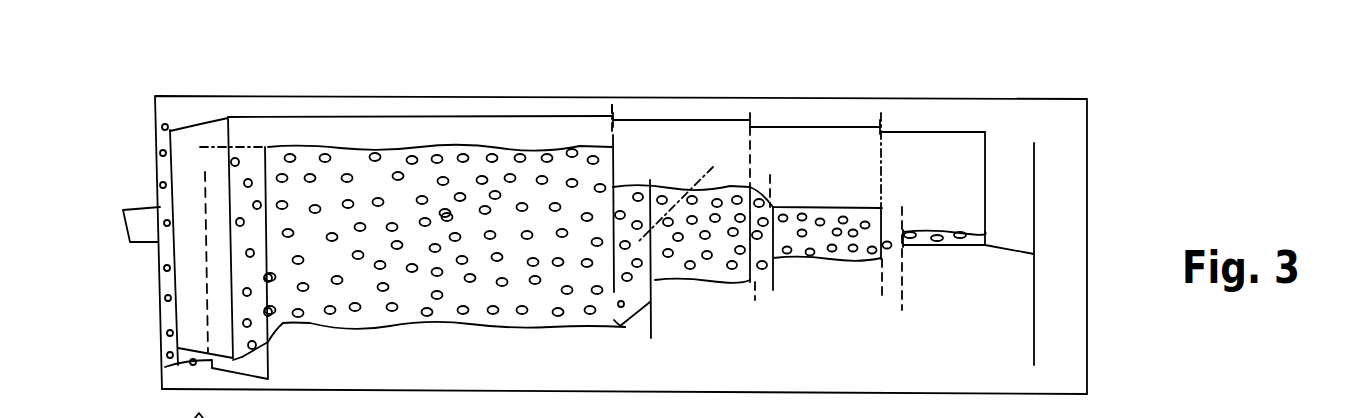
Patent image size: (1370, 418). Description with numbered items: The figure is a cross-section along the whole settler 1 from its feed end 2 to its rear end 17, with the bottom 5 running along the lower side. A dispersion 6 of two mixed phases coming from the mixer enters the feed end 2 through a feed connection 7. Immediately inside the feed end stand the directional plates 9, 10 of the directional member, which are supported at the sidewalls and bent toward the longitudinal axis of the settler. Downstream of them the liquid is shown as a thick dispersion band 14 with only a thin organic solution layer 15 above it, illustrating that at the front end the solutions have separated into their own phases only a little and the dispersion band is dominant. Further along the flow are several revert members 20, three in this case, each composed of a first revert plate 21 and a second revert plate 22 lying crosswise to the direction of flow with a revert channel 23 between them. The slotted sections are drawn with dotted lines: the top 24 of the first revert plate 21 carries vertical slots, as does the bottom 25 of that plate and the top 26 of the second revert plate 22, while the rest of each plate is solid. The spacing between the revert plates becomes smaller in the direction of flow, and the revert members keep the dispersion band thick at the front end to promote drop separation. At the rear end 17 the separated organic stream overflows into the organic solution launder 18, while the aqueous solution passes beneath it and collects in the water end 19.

The settler 1 is at (283, 57).
The feed end 2 is at (157, 160).
The bottom 5 is at (417, 393).
The dispersion 6 is at (165, 277).
The feed connection 7 is at (128, 218).
The first directional plate 9 is at (208, 130).
The second directional plate 10 is at (263, 147).
The dispersion band 14 is at (517, 177).
The organic solution layer 15 is at (455, 128).
The rear end 17 is at (1087, 213).
The organic solution launder 18 is at (1006, 150).
The water end 19 is at (1075, 360).
The revert member 20 is at (650, 80).
The first revert plate 21 is at (616, 170).
The second revert plate 22 is at (653, 312).
The revert channel 23 is at (694, 187).
The top of the first revert plate 24 is at (607, 128).
The bottom of the first revert plate 25 is at (618, 322).
The top of the second revert plate 26 is at (650, 180).